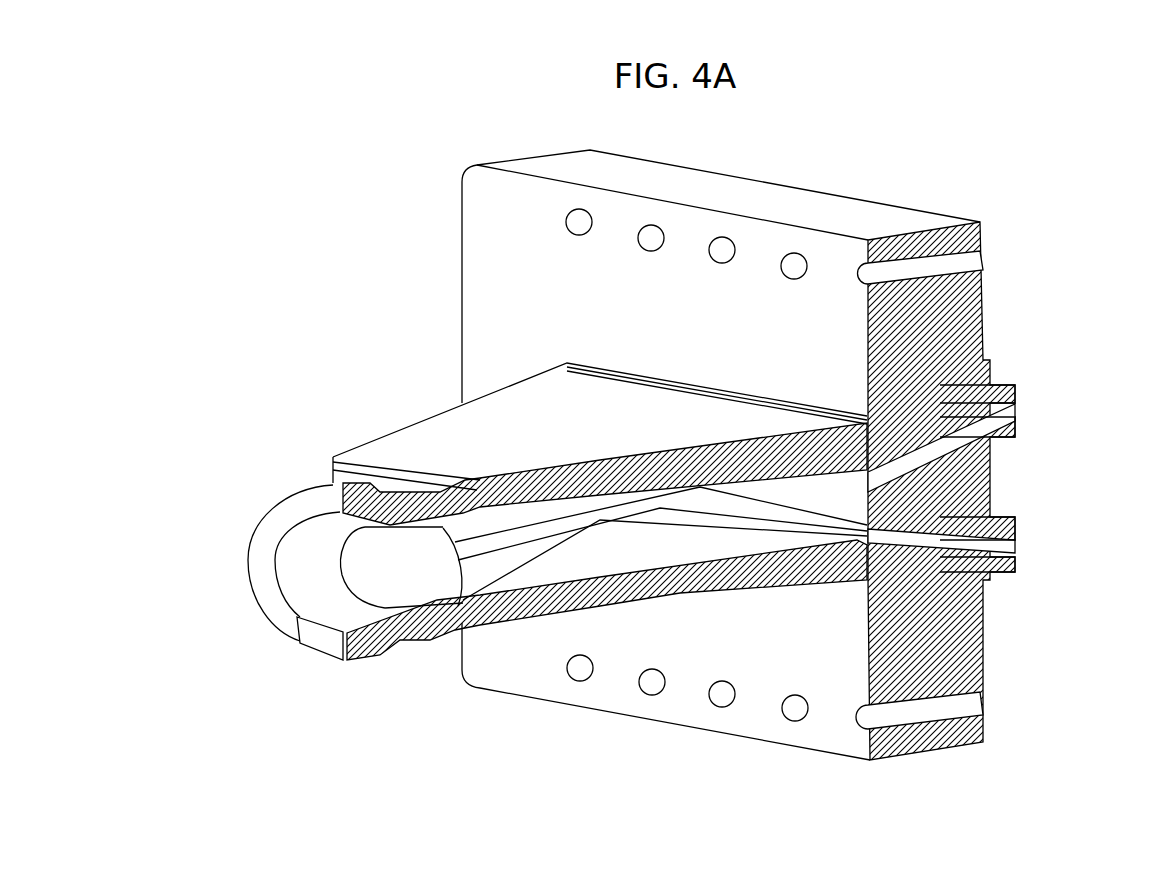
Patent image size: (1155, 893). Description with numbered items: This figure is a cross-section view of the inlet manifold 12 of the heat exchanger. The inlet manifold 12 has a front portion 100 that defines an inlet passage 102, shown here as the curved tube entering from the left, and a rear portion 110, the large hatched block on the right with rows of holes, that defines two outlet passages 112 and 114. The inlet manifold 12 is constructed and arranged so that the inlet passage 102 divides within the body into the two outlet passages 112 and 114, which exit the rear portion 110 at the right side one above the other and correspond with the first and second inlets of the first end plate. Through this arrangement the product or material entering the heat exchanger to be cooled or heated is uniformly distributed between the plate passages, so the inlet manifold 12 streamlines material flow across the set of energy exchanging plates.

The inlet manifold 12 is at (398, 268).
The front portion 100 is at (457, 450).
The inlet passage 102 is at (300, 617).
The rear portion 110 is at (867, 216).
The outlet passage 112 is at (1003, 411).
The outlet passage 114 is at (1000, 546).